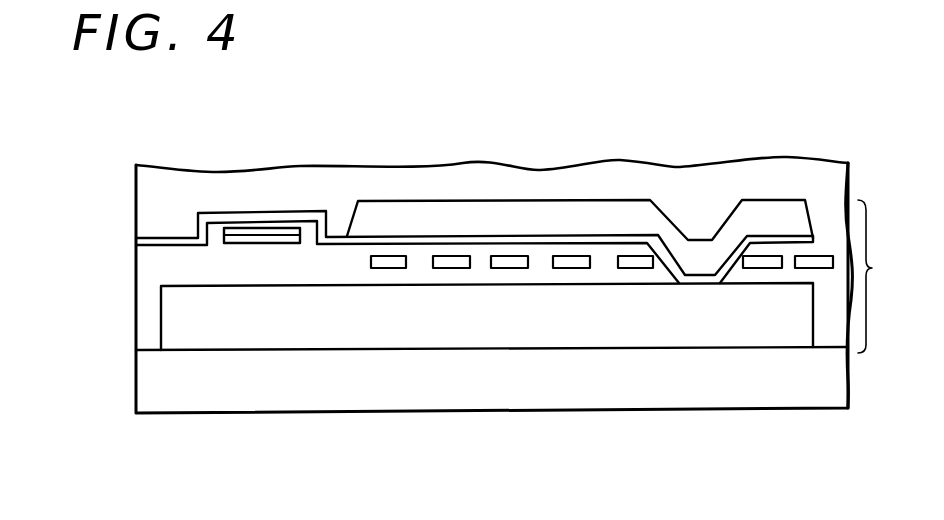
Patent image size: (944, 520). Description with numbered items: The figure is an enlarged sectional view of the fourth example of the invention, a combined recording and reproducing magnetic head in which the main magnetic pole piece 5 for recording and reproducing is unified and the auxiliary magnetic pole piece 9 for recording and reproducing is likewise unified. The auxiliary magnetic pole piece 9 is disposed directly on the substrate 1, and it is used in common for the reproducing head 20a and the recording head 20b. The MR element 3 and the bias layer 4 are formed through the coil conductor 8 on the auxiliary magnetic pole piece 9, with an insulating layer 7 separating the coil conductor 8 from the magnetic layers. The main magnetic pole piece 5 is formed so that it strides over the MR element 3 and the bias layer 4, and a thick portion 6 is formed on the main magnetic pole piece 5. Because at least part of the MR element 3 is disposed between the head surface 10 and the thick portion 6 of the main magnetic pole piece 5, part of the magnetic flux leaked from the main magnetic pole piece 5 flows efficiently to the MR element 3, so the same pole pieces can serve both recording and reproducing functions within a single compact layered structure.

The substrate 1 is at (200, 385).
The MR element 3 is at (286, 243).
The bias layer 4 is at (262, 229).
The main magnetic pole piece 5 is at (167, 240).
The thick portion 6 is at (466, 217).
The insulating layer 7 is at (215, 258).
The coil conductor 8 is at (638, 258).
The auxiliary magnetic pole piece 9 is at (495, 328).
The head surface 10 is at (136, 330).
The reproducing head 20a is at (134, 199).
The recording head 20b is at (892, 276).